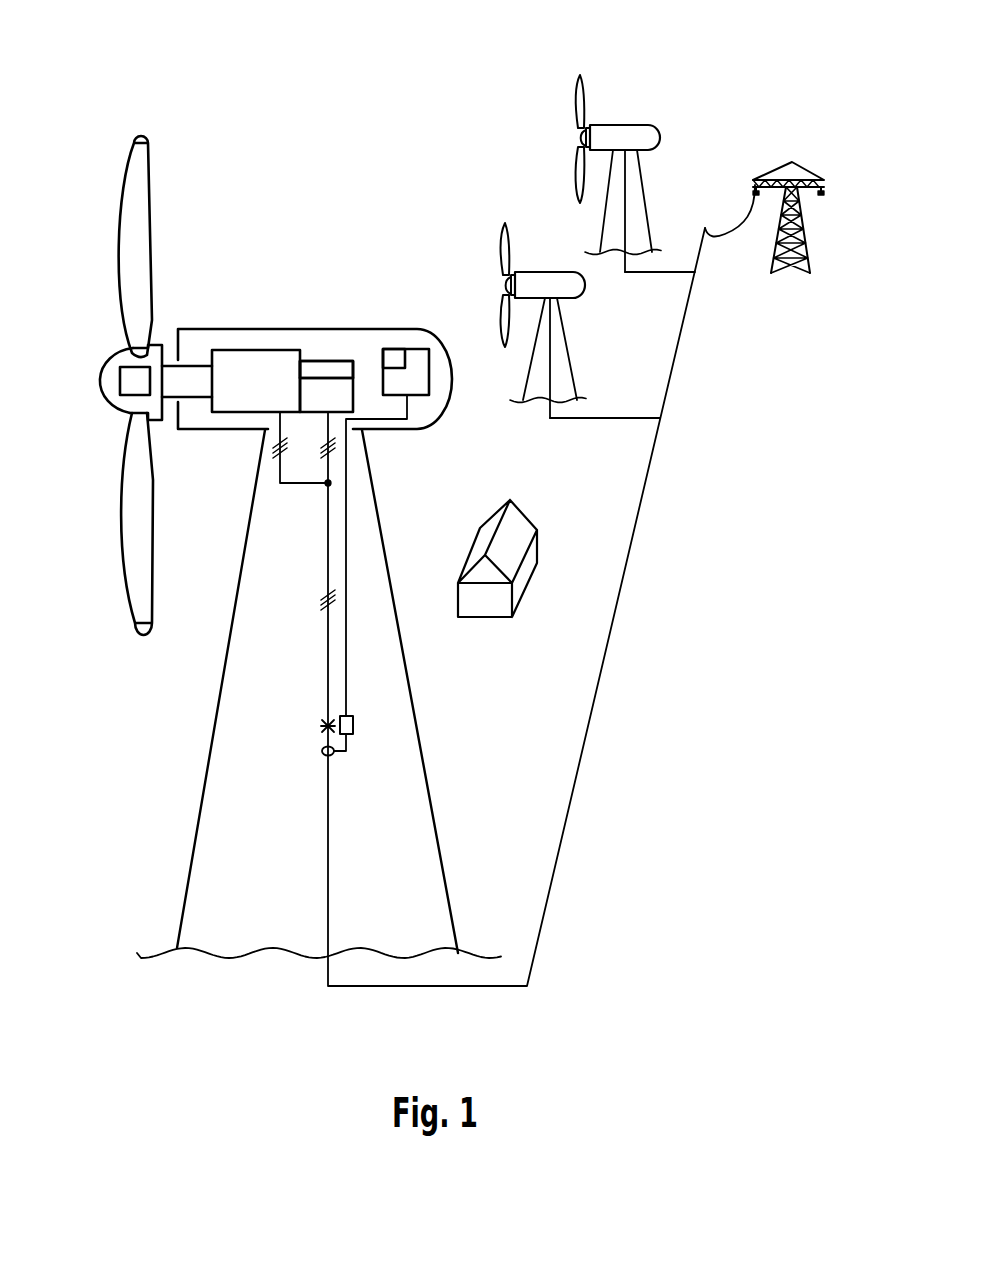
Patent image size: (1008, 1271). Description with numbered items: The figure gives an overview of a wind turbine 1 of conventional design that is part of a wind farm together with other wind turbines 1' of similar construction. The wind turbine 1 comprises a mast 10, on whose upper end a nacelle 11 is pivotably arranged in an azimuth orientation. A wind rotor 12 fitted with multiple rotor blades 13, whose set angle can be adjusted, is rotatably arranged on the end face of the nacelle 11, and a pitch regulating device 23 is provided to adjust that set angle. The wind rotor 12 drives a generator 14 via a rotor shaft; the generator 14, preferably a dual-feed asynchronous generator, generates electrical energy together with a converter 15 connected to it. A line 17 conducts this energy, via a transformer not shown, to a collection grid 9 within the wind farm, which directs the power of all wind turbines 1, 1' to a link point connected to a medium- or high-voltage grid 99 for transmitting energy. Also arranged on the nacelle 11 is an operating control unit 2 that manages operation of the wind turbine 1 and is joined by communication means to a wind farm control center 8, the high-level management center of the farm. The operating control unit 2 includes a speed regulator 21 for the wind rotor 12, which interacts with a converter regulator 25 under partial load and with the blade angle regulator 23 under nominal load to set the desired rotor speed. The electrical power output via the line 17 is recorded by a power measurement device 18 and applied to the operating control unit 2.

The wind turbine 1 is at (432, 513).
The other wind turbines 1' is at (581, 229).
The operating control unit 2 is at (423, 373).
The wind farm control center 8 is at (515, 508).
The collection grid 9 is at (677, 352).
The mast 10 is at (202, 790).
The nacelle 11 is at (270, 328).
The wind rotor 12 is at (110, 355).
The rotor blades 13 is at (135, 197).
The generator 14 is at (225, 357).
The converter 15 is at (315, 383).
The line 17 is at (327, 562).
The power measurement device 18 is at (353, 722).
The speed regulator 21 is at (392, 355).
The pitch regulating device 23 is at (130, 383).
The converter regulator 25 is at (347, 360).
The medium- or high-voltage grid 99 is at (792, 160).